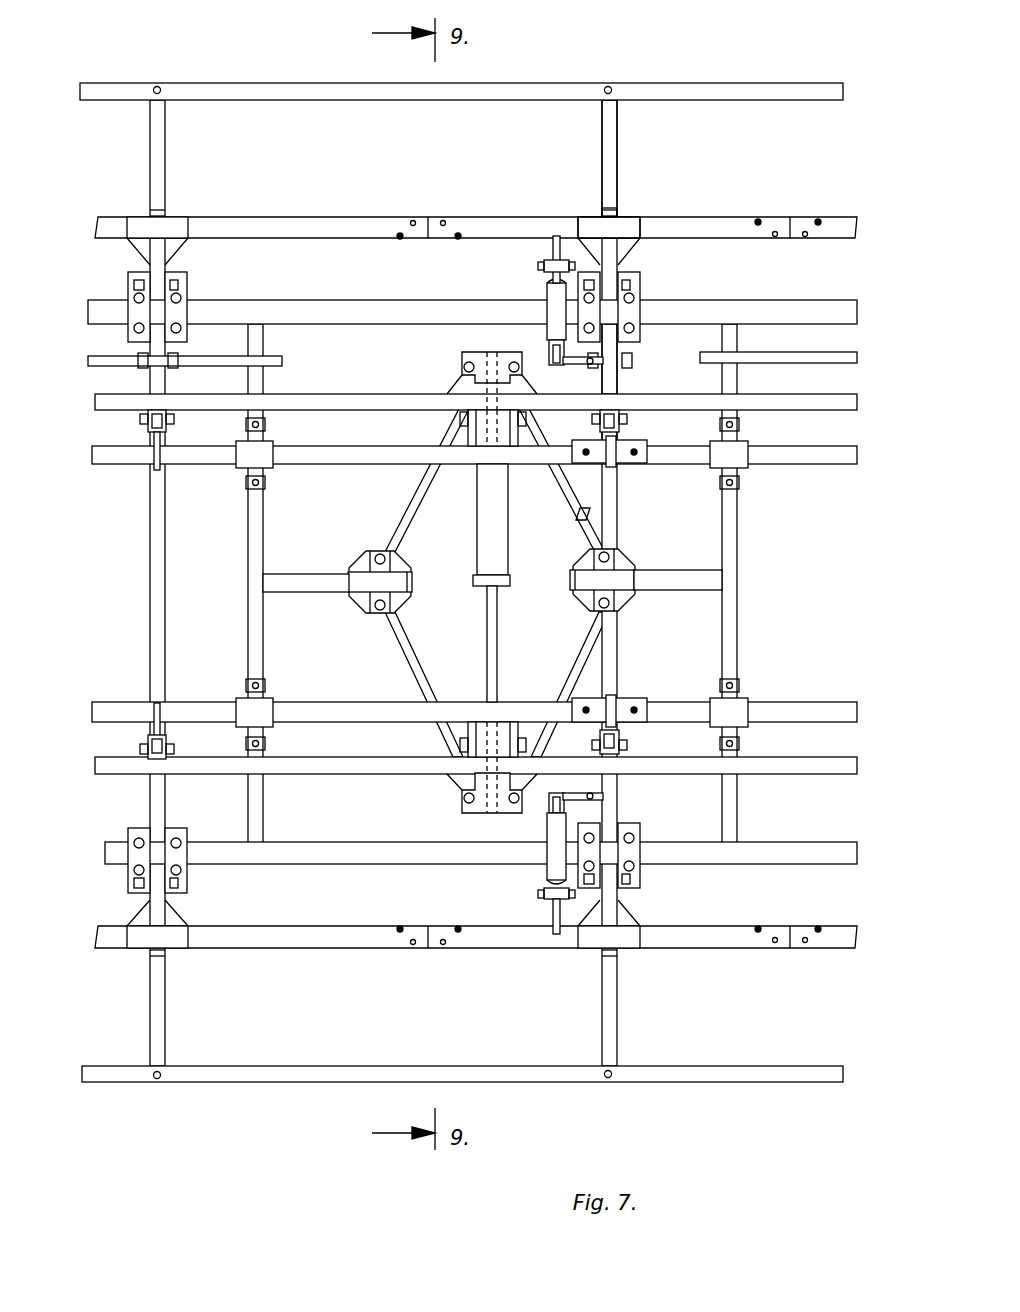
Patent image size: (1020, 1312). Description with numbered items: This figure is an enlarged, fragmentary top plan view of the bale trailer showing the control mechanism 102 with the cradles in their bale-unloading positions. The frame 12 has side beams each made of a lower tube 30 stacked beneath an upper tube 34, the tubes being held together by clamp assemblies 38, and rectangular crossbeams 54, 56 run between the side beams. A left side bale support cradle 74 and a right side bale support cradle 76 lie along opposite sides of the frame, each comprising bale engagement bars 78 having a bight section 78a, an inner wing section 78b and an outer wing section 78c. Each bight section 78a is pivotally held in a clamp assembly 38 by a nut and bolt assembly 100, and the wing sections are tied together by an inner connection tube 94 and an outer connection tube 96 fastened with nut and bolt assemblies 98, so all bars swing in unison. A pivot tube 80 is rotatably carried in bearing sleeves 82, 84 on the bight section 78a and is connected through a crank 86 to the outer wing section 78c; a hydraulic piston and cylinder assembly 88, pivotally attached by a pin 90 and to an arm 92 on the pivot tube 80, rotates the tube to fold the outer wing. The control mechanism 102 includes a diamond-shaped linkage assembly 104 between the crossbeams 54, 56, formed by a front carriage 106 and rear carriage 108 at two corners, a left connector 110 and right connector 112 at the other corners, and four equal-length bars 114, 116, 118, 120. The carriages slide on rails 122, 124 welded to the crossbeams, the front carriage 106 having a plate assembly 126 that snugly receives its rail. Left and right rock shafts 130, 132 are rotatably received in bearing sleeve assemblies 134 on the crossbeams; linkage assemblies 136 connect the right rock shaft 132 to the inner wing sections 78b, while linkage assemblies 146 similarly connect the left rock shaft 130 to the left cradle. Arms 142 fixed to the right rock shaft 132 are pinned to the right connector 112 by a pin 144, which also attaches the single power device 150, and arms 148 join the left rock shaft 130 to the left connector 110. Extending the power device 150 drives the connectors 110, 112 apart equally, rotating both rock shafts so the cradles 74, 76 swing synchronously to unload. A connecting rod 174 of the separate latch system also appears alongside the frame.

The frame 12 is at (485, 302).
The lower tube 30 is at (850, 864).
The upper tube 34 is at (838, 324).
The clamp assembly 38 is at (381, 570).
The third crossbeam 54 is at (249, 516).
The fourth crossbeam 56 is at (738, 506).
The left side bale support cradle 74 is at (815, 1088).
The right side bale support cradle 76 is at (478, 68).
The bale engagement bar 78 is at (166, 118).
The bight section 78a is at (619, 350).
The inner wing section 78b is at (621, 426).
The outer wing section 78c is at (612, 153).
The pivot tube 80 is at (838, 224).
The bearing sleeve 82 is at (590, 216).
The bearing sleeve 84 is at (638, 216).
The crank 86 is at (612, 208).
The hydraulic piston and cylinder assembly 88 is at (544, 300).
The pin 90 is at (545, 352).
The arm 92 is at (545, 246).
The inner connection tube 94 is at (838, 408).
The outer connection tube 96 is at (712, 84).
The nut and bolt assembly 98 is at (160, 86).
The nut and bolt assembly 100 is at (135, 284).
The control mechanism 102 is at (375, 586).
The diamond-shaped linkage assembly 104 is at (600, 528).
The front carriage 106 is at (372, 612).
The rear carriage 108 is at (632, 576).
The left connector 110 is at (461, 810).
The right connector 112 is at (462, 356).
The bar 114 is at (404, 661).
The bar 116 is at (598, 623).
The bar 118 is at (411, 493).
The bar 120 is at (580, 514).
The rail 122 is at (315, 592).
The rail 124 is at (663, 590).
The plate assembly 126 is at (405, 575).
The left rock shaft 130 is at (838, 702).
The right rock shaft 132 is at (836, 462).
The bearing sleeve assembly 134 is at (273, 445).
The linkage assembly 136 is at (155, 470).
The arm 142 is at (467, 457).
The pin 144 is at (459, 420).
The linkage assembly 146 is at (157, 702).
The arm 148 is at (467, 732).
The power device 150 is at (496, 603).
The connecting rod 174 is at (95, 362).